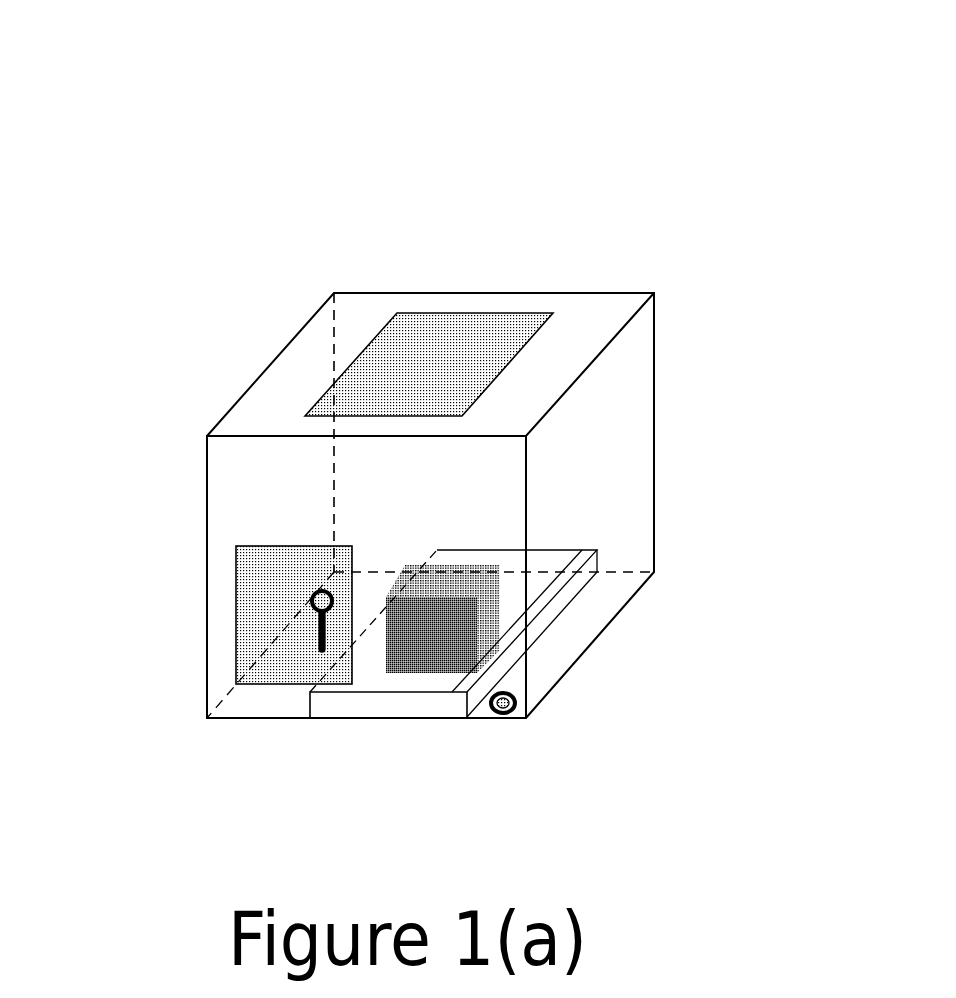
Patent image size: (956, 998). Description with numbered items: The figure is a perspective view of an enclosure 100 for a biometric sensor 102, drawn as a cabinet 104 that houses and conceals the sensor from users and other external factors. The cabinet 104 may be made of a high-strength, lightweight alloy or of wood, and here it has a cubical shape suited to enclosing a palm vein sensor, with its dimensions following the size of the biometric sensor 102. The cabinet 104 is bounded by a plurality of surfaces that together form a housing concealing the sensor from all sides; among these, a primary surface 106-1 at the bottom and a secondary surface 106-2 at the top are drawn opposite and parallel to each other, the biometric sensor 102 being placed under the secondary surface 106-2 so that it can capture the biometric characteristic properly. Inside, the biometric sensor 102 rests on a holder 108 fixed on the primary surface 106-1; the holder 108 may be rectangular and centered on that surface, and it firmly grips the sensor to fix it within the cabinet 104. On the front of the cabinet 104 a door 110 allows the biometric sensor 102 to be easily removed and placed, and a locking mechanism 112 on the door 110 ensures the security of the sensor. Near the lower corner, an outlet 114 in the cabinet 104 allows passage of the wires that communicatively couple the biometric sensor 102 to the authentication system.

The enclosure 100 is at (470, 68).
The biometric sensor 102 is at (483, 648).
The cabinet 104 is at (653, 527).
The primary surface 106-1 is at (352, 742).
The secondary surface 106-2 is at (506, 302).
The holder 108 is at (548, 610).
The door 110 is at (248, 666).
The locking mechanism 112 is at (312, 601).
The outlet 114 is at (517, 705).